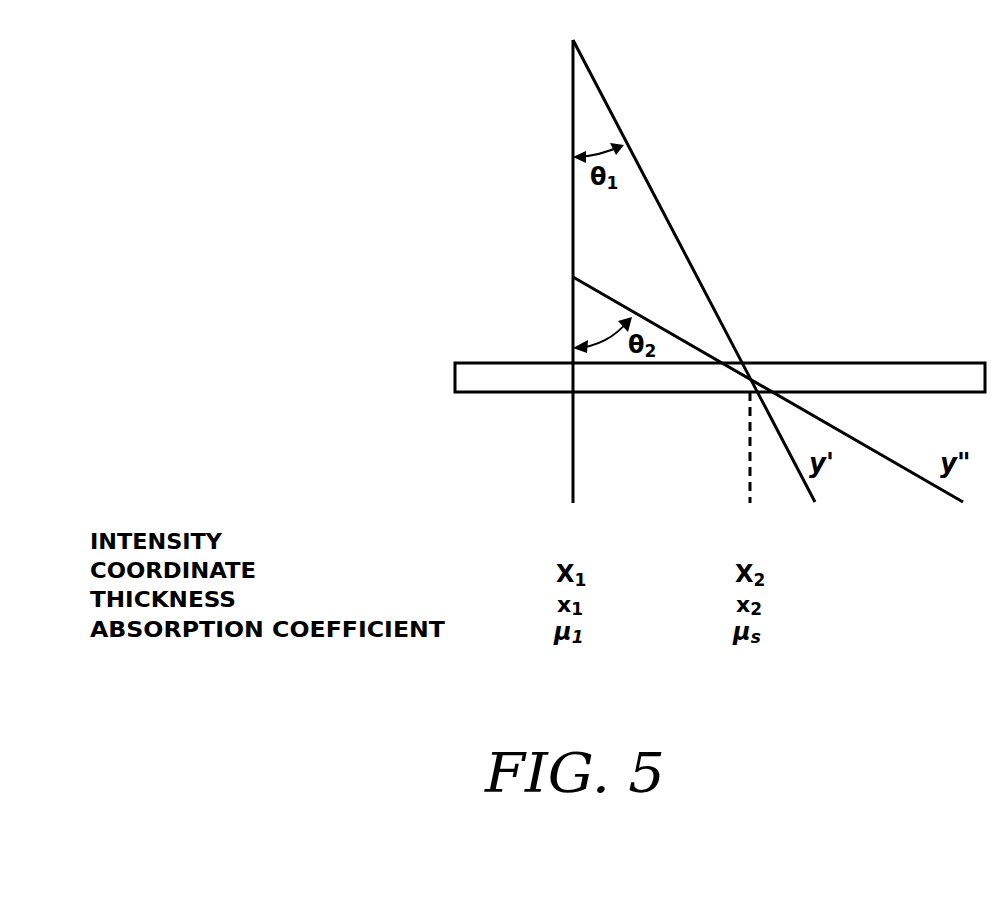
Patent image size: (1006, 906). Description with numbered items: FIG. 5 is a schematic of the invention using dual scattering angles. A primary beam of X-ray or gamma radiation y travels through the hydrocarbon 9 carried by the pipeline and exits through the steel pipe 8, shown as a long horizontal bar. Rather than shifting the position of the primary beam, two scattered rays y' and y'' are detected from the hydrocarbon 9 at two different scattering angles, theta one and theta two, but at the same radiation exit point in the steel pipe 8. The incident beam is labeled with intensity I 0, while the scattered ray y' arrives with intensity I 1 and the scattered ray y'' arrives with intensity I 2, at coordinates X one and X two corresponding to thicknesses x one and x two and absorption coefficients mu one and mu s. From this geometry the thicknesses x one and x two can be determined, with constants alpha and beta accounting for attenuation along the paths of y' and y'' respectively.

The steel pipe 8 is at (493, 362).
The hydrocarbon 9 is at (726, 297).
The incident beam (intensity I0) 0 is at (570, 297).
The transmitted beam y' (intensity I1) 1 is at (700, 296).
The transmitted beam y'' (intensity I2) 2 is at (774, 415).